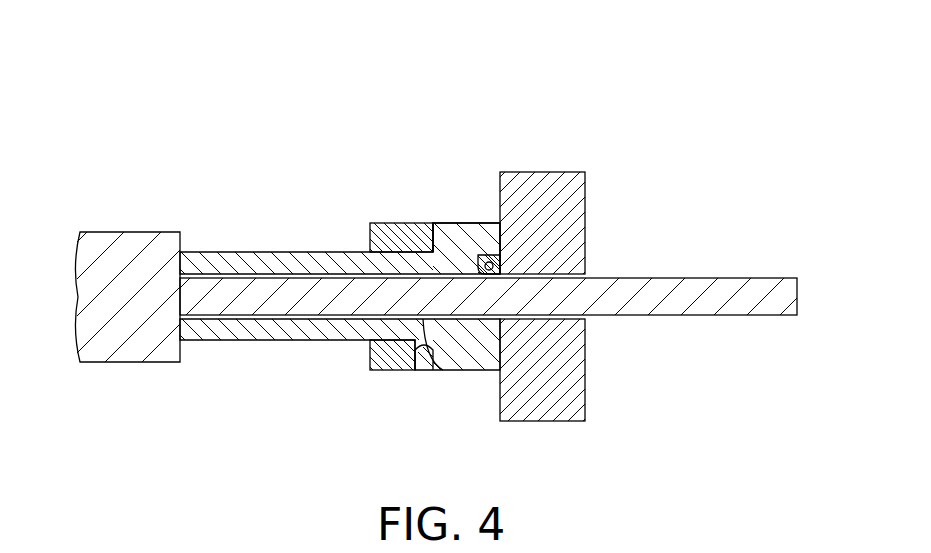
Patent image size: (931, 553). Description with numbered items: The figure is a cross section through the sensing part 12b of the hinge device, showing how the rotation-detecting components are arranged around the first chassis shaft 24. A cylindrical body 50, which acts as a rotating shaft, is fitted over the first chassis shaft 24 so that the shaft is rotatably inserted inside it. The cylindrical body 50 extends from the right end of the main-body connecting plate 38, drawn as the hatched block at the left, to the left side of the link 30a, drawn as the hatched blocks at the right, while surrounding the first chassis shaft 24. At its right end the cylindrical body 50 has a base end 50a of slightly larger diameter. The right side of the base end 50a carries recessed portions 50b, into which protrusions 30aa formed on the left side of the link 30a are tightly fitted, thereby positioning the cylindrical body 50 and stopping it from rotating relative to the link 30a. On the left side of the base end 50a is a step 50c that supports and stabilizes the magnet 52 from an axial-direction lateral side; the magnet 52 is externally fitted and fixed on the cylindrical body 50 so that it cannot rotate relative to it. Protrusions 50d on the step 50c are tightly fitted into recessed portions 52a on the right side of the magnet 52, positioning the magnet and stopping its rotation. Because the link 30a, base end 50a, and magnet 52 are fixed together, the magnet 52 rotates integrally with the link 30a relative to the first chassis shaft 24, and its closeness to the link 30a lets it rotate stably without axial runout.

The sensing part 12b is at (410, 83).
The first chassis shaft 24 is at (743, 292).
The link 30a is at (573, 176).
The protrusions 30aa is at (498, 268).
The main-body connecting plate 38 is at (131, 243).
The cylindrical body 50 is at (290, 262).
The base end 50a is at (467, 232).
The recessed portions 50b is at (505, 262).
The step 50c is at (423, 232).
The protrusions 50d is at (441, 372).
The magnet 52 is at (385, 235).
The recessed portions 52a is at (407, 372).